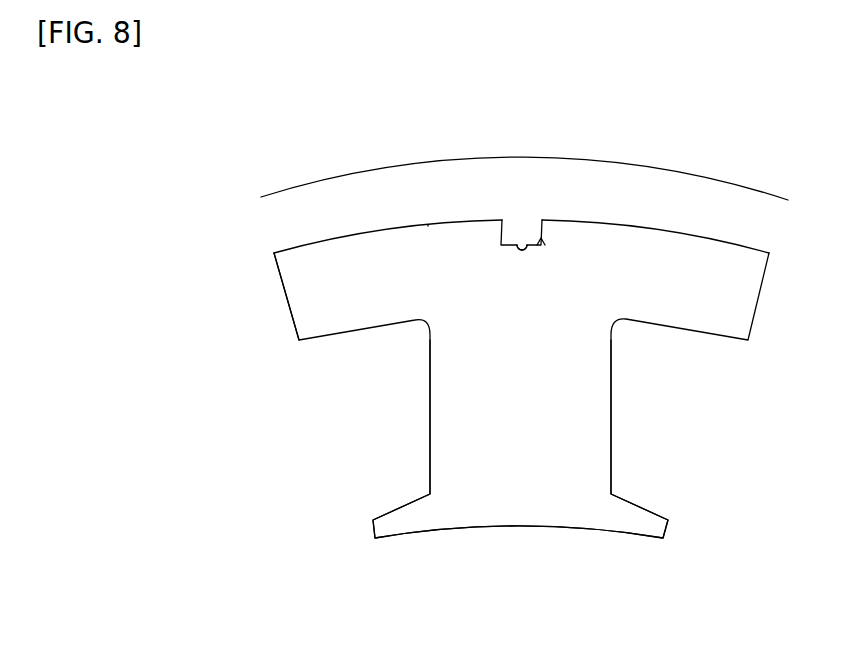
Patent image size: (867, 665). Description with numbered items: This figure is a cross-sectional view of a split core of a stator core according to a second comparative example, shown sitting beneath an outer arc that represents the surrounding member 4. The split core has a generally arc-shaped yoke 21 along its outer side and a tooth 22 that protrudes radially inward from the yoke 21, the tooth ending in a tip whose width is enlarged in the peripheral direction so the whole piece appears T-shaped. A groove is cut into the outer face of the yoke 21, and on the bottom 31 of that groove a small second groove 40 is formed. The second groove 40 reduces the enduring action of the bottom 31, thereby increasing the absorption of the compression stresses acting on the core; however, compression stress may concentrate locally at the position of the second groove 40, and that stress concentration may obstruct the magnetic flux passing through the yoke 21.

The rotor / outer ring 4 is at (692, 187).
The yoke 21 is at (328, 272).
The tooth 22 is at (524, 420).
The bottom 31 is at (546, 240).
The second groove 40 is at (522, 250).